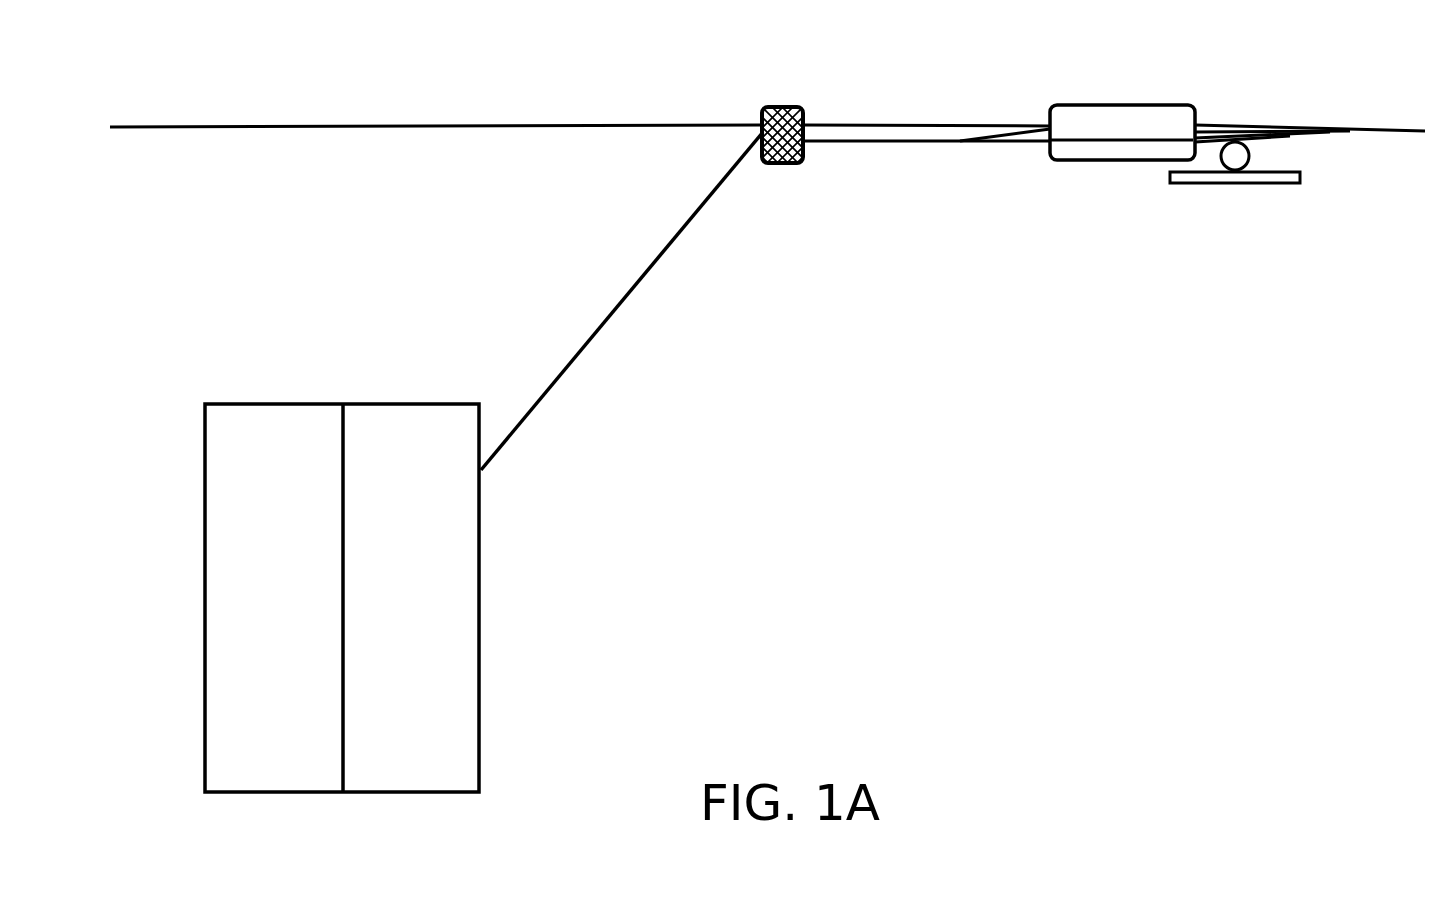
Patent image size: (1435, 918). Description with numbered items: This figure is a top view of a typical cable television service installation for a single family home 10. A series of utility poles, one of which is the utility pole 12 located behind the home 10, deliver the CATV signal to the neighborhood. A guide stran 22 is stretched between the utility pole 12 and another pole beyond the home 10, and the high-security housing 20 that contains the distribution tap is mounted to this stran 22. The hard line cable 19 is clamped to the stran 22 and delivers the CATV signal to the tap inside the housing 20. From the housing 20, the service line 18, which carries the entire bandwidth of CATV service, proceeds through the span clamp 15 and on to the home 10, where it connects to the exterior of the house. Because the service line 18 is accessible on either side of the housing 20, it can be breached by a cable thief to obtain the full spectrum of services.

The single family home 10 is at (257, 422).
The utility pole 12 is at (1236, 170).
The span clamp 15 is at (785, 105).
The service line 18 is at (652, 263).
The hard line cable 19 is at (1035, 130).
The high-security housing 20 is at (1070, 105).
The guide stran 22 is at (527, 118).